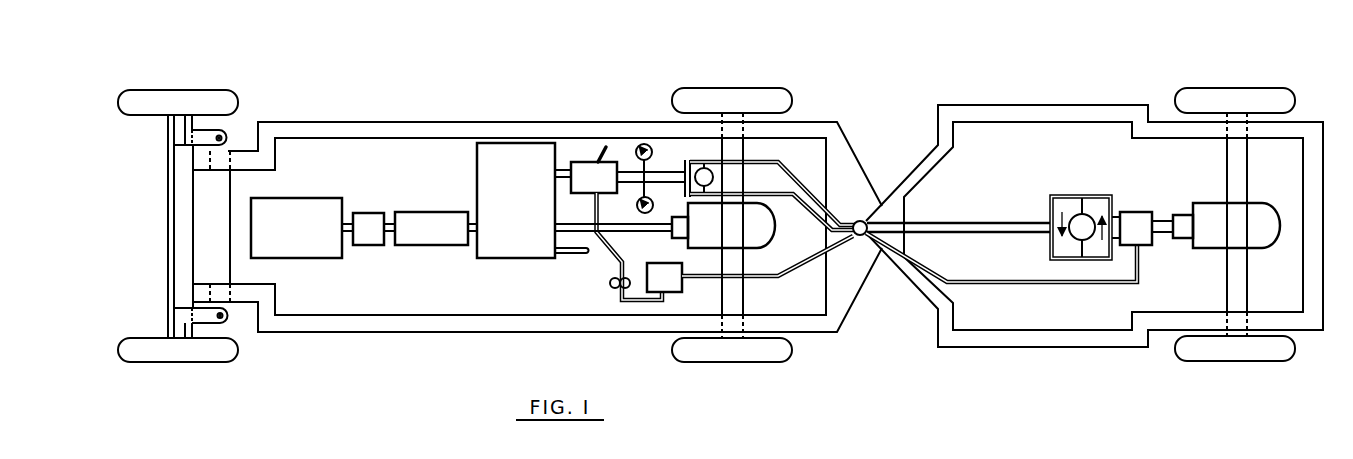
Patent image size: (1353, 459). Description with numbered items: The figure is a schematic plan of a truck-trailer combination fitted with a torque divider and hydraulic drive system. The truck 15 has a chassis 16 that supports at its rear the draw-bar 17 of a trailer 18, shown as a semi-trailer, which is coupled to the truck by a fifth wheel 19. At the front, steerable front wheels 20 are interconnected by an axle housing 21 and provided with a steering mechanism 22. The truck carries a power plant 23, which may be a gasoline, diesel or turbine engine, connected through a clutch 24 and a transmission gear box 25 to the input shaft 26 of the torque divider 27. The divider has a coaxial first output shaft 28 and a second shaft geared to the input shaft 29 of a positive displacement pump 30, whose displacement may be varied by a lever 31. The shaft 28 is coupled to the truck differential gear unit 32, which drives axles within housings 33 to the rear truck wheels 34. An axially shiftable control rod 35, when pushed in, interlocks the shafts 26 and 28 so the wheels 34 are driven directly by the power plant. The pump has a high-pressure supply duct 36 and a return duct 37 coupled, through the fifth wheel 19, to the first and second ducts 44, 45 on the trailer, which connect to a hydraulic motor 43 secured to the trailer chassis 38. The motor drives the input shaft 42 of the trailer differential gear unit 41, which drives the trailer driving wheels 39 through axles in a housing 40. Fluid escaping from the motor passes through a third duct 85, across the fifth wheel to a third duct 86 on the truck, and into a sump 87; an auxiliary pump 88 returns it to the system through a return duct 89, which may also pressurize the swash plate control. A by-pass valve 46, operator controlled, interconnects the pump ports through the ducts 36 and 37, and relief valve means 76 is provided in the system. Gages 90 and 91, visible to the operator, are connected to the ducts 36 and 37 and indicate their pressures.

The truck 15 is at (500, 228).
The chassis 16 is at (305, 122).
The draw-bar 17 is at (927, 162).
The trailer 18 is at (1094, 216).
The fifth wheel 19 is at (859, 220).
The steerable front wheels 20 is at (157, 96).
The axle housing 21 is at (169, 185).
The steering mechanism 22 is at (230, 140).
The power plant 23 is at (291, 201).
The clutch 24 is at (365, 213).
The transmission gear box 25 is at (420, 212).
The input shaft 26 is at (472, 234).
The torque divider 27 is at (507, 255).
The first output shaft 28 is at (625, 230).
The input shaft 29 is at (562, 172).
The pump 30 is at (603, 194).
The lever 31 is at (594, 150).
The truck differential gear unit 32 is at (768, 232).
The housings 33 is at (728, 256).
The rear truck wheels 34 is at (742, 94).
The control rod 35 is at (578, 256).
The high-pressure supply duct 36 is at (765, 161).
The return duct 37 is at (780, 192).
The chassis 38 is at (1027, 330).
The driving wheels 39 is at (1250, 95).
The housing 40 is at (1247, 172).
The differential gear unit 41 is at (1256, 246).
The input shaft 42 is at (1164, 219).
The hydraulic motor 43 is at (1133, 212).
The first duct 44 is at (975, 221).
The second duct 45 is at (975, 234).
The by-pass valve 46 is at (713, 178).
The relief valve means 76 is at (1077, 212).
The third duct 85 is at (1020, 285).
The third duct 86 is at (778, 279).
The sump 87 is at (672, 289).
The auxiliary pump 88 is at (612, 287).
The return duct 89 is at (594, 210).
The gage 90 is at (652, 152).
The gage 91 is at (653, 205).